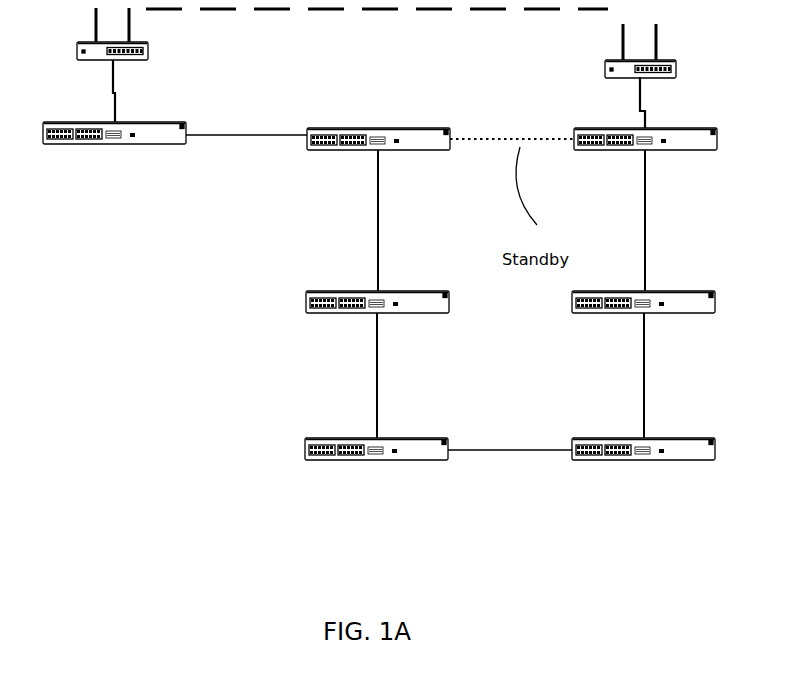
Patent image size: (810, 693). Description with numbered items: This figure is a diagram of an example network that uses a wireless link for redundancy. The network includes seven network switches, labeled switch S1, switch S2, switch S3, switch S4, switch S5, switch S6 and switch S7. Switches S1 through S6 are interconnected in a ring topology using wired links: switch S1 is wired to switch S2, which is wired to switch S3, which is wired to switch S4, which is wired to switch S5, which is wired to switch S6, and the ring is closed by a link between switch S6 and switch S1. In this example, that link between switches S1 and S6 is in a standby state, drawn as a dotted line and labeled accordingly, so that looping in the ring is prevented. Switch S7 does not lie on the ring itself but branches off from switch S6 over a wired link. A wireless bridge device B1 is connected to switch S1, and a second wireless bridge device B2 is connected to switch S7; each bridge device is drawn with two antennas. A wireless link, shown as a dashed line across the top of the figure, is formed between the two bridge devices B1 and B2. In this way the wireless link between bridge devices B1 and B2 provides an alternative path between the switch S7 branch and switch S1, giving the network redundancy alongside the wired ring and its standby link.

The wireless bridge device B1 is at (640, 63).
The wireless bridge device B2 is at (113, 46).
The network switch S1 is at (645, 155).
The network switch S2 is at (643, 319).
The network switch S3 is at (643, 466).
The network switch S4 is at (376, 466).
The network switch S5 is at (377, 319).
The network switch S6 is at (378, 156).
The network switch S7 is at (114, 149).